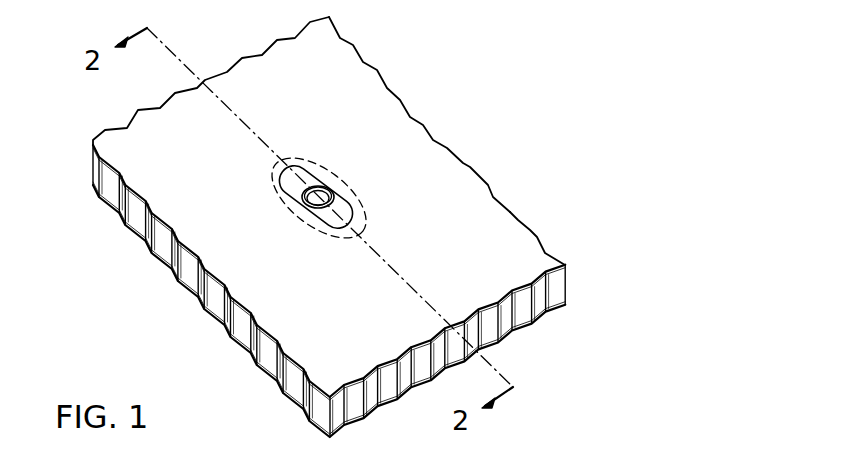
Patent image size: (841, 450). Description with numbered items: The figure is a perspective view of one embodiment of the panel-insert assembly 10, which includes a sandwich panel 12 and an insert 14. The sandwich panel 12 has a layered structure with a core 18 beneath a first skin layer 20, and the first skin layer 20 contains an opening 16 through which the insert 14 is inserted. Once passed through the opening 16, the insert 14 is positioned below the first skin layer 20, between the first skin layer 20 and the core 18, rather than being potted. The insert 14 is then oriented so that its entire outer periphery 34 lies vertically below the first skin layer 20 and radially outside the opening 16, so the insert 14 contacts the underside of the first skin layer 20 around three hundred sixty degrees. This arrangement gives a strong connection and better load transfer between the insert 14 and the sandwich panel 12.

The panel-insert assembly 10 is at (460, 90).
The sandwich panel 12 is at (466, 163).
The insert 14 is at (303, 173).
The opening 16 is at (340, 200).
The core 18 is at (537, 311).
The first skin layer 20 is at (513, 220).
The outer periphery 34 is at (363, 215).